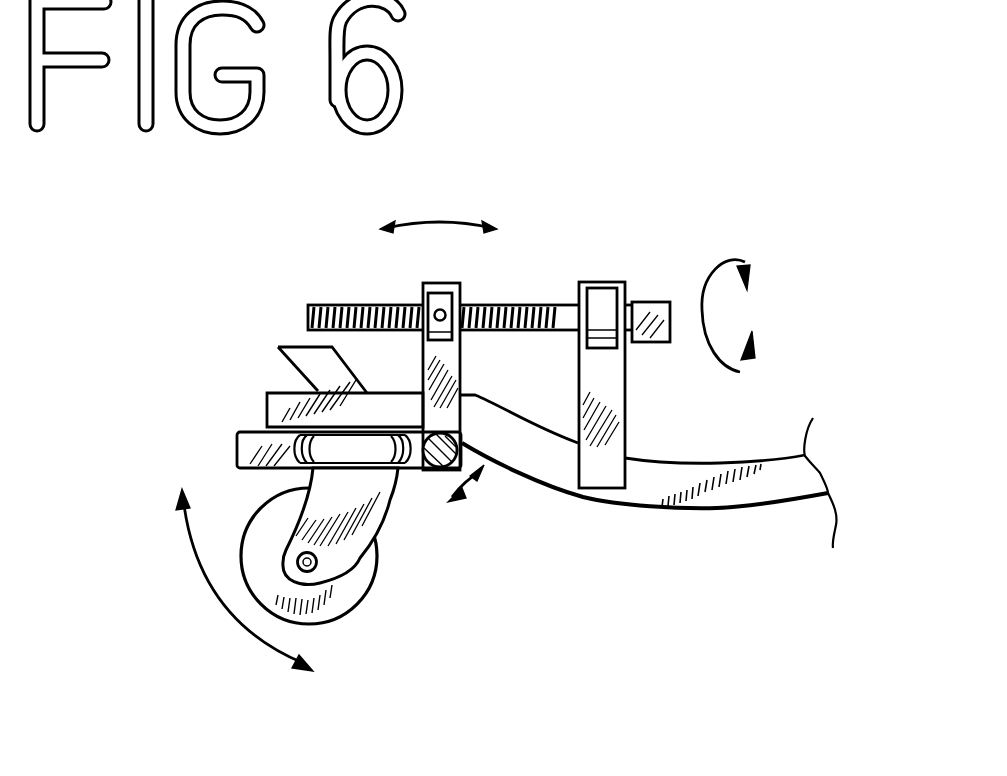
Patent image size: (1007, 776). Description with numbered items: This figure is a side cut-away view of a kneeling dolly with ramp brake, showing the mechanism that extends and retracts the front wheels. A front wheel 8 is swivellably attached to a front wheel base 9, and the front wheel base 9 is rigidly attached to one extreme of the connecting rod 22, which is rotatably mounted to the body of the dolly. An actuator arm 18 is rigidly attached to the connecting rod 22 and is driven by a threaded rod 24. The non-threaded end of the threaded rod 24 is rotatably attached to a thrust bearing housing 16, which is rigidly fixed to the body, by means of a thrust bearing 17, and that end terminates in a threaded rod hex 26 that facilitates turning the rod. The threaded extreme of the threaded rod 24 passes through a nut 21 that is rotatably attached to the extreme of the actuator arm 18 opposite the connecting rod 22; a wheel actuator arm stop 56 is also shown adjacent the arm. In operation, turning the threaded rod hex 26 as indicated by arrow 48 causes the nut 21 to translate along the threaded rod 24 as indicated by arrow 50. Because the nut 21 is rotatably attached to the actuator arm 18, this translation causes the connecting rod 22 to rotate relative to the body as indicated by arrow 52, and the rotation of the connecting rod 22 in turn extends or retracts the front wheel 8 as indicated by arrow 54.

The front wheel 8 is at (352, 615).
The front wheel base 9 is at (242, 432).
The thrust bearing housing 16 is at (625, 433).
The thrust bearing 17 is at (583, 282).
The actuator arm 18 is at (543, 303).
The nut 21 is at (437, 297).
The connecting rod 22 is at (420, 470).
The threaded rod 24 is at (602, 290).
The threaded rod hex 26 is at (652, 300).
The arrow 48 is at (730, 258).
The arrow 50 is at (440, 220).
The arrow 52 is at (470, 487).
The arrow 54 is at (228, 610).
The wheel actuator arm stop 56 is at (288, 345).